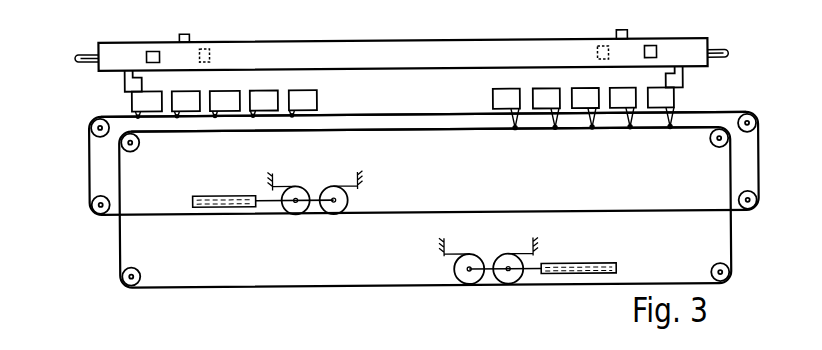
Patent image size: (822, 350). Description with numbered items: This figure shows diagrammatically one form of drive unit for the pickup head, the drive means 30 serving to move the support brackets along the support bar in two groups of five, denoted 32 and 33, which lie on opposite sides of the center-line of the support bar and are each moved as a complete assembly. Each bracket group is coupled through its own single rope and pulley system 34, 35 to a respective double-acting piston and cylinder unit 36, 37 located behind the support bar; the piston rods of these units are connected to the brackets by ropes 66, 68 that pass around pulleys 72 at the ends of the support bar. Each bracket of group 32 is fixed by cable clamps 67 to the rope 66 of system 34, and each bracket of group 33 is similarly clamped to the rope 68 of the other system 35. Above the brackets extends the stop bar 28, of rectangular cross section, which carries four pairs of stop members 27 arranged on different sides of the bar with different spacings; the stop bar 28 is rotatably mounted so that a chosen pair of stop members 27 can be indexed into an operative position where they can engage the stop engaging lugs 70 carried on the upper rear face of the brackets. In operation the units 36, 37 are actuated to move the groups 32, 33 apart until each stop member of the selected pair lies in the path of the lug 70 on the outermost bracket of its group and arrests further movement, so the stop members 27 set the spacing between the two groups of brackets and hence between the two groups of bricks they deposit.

The stop members 27 is at (152, 51).
The stop bar 28 is at (365, 45).
The drive means 30 is at (565, 190).
The group of support brackets 32 is at (320, 100).
The group of support brackets 33 is at (492, 99).
The rope and pulley system 34 is at (388, 146).
The rope and pulley system 35 is at (388, 207).
The double-acting piston and cylinder unit 36 is at (214, 196).
The double-acting piston and cylinder unit 37 is at (574, 266).
The rope 66 is at (396, 118).
The cable clamps 67 is at (293, 119).
The rope 68 is at (422, 132).
The stop engaging lugs 70 is at (131, 91).
The pulleys 72 is at (90, 131).